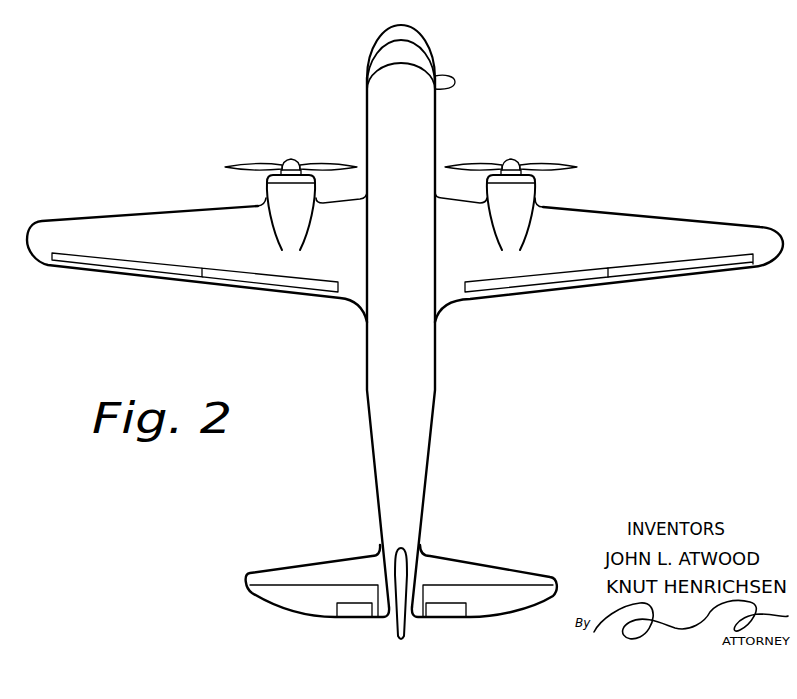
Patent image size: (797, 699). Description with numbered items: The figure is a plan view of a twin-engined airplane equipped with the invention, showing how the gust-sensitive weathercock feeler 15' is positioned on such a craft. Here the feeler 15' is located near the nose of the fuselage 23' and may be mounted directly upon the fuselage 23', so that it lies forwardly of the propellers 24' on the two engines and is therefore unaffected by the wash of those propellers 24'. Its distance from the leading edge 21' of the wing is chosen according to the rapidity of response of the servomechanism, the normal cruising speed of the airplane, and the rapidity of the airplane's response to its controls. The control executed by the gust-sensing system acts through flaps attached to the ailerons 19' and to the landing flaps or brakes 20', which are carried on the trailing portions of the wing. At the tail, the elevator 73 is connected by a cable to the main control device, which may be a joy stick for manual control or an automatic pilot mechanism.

The feeler 15' is at (463, 69).
The fuselage 23' is at (425, 316).
The propellers 24' is at (535, 161).
The leading edge 21' is at (197, 248).
The landing flaps 20' is at (536, 309).
The ailerons 19' is at (680, 302).
The elevator 73 is at (277, 600).